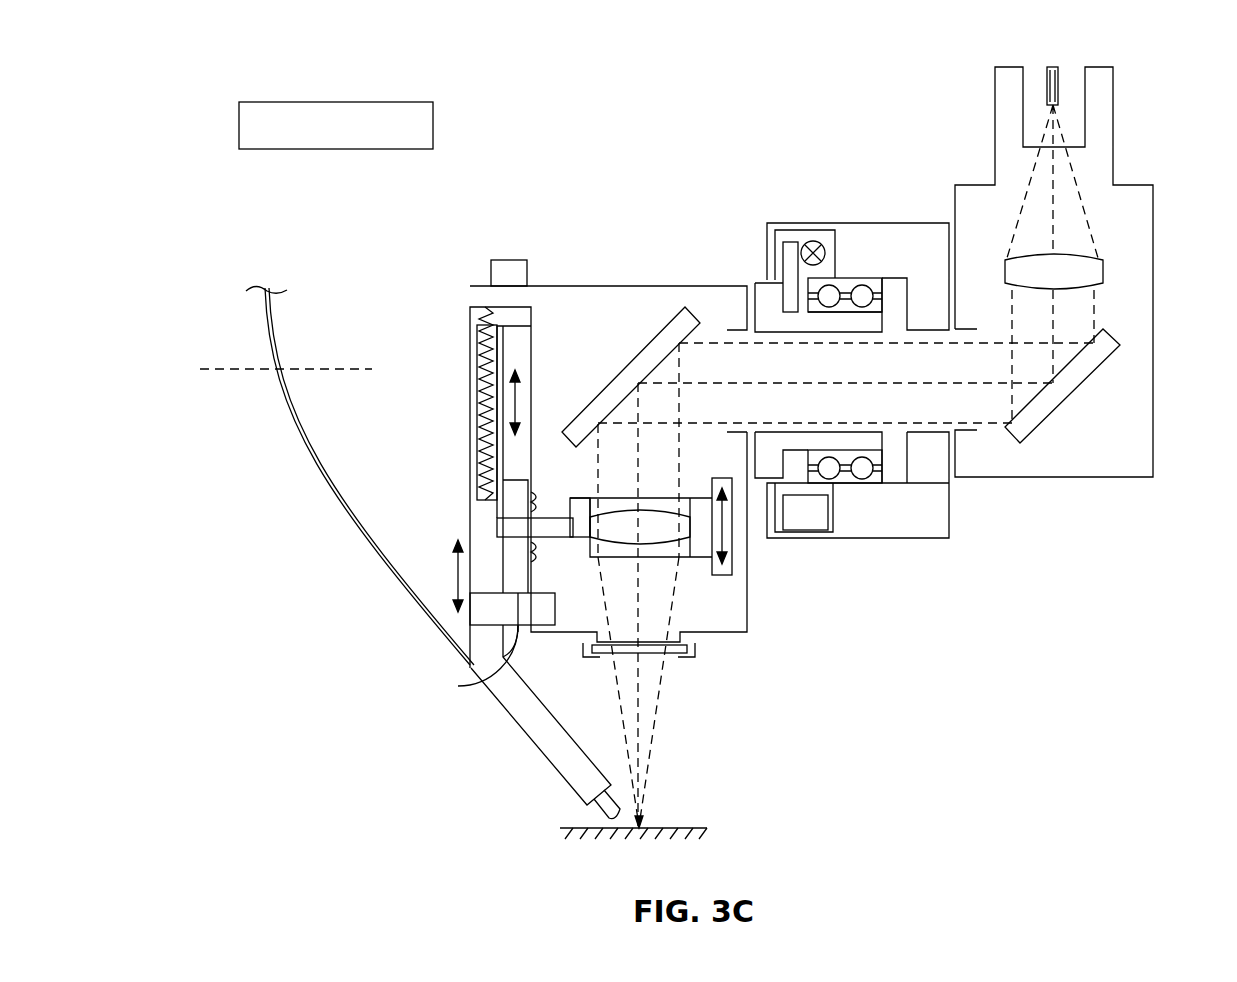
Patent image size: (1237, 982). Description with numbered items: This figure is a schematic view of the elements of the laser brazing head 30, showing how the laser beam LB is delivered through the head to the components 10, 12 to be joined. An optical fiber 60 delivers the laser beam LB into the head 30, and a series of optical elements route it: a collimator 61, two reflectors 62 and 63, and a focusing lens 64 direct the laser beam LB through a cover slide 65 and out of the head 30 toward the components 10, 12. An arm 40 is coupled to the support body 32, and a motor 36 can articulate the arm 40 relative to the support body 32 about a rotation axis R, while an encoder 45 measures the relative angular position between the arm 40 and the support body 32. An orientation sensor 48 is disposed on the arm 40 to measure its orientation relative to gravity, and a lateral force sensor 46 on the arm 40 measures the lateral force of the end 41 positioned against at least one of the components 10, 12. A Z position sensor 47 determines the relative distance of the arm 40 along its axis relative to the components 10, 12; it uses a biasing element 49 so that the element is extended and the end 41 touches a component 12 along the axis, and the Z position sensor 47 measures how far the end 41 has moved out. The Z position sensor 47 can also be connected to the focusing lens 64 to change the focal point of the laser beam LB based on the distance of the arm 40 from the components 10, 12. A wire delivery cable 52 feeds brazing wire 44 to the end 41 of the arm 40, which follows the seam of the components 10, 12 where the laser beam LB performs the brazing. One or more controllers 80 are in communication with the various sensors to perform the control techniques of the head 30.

The controller 80 is at (336, 102).
The laser brazing head 30 is at (641, 172).
The arm 40 is at (748, 602).
The orientation sensor 48 is at (510, 260).
The biasing element 49 is at (478, 373).
The Z position sensor 47 is at (490, 445).
The brazing wire 44 is at (585, 577).
The lateral force sensor 46 is at (482, 684).
The end 41 is at (503, 757).
The wire delivery cable 52 is at (330, 487).
The rotation axis R is at (222, 368).
The reflector 63 is at (631, 360).
The focusing lens 64 is at (622, 510).
The cover slide 65 is at (648, 655).
The laser beam LB is at (647, 767).
The motor 36 is at (762, 282).
The support body 32 is at (940, 538).
The encoder 45 is at (808, 538).
The optical fiber 60 is at (1060, 75).
The collimator 61 is at (1103, 272).
The reflector 62 is at (1067, 397).
The component 10 is at (681, 815).
The component 12 is at (693, 827).